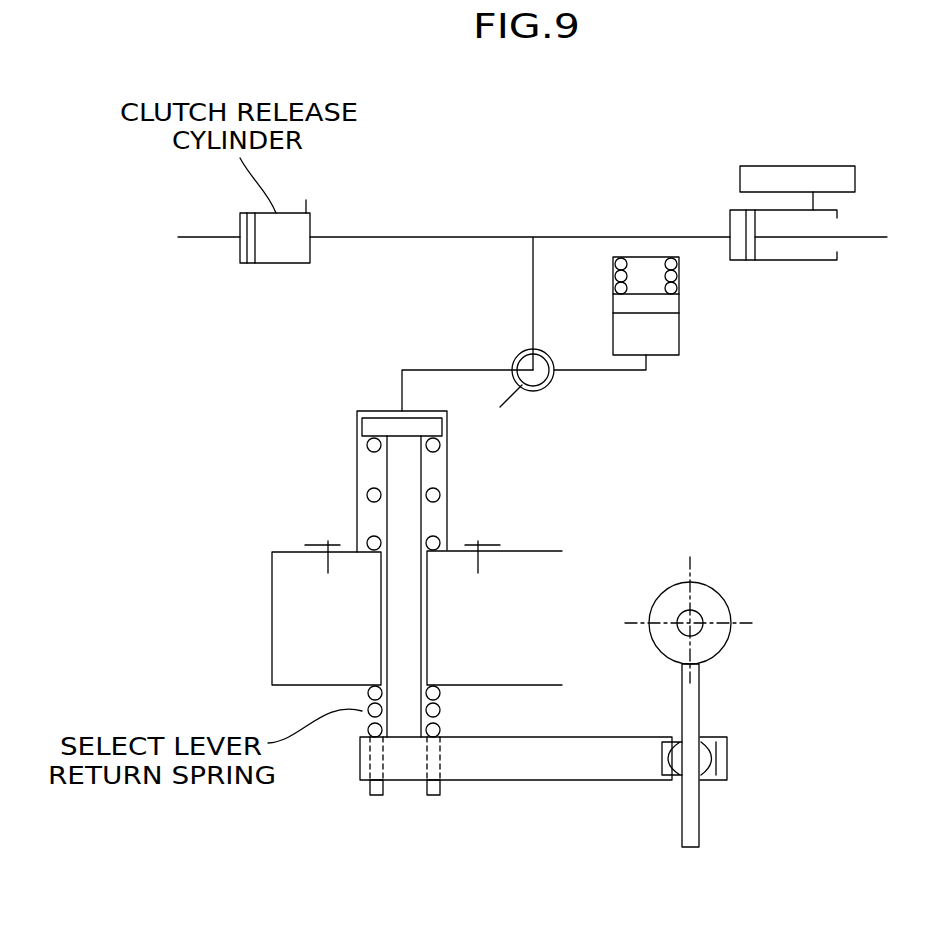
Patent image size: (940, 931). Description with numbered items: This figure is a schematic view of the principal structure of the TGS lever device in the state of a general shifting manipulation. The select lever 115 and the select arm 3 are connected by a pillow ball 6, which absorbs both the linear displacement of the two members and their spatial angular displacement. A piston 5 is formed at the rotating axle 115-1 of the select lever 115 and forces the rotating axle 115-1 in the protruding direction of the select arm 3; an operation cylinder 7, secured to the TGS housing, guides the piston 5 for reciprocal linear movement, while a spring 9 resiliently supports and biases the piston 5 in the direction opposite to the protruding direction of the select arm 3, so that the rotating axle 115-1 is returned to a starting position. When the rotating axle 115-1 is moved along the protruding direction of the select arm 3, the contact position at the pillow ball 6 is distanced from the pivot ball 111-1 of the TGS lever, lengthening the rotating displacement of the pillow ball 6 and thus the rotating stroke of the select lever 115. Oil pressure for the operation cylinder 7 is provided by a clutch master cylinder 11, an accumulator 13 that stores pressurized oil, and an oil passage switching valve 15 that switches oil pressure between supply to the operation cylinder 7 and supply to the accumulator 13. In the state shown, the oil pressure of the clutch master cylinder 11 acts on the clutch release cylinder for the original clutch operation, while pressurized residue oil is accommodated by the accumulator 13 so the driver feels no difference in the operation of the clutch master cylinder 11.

The select arm 3 is at (693, 812).
The piston 5 is at (438, 428).
The pillow ball 6 is at (680, 767).
The operation cylinder 7 is at (357, 443).
The spring 9 is at (366, 496).
The clutch master cylinder 11 is at (786, 260).
The accumulator 13 is at (670, 335).
The oil passage switching valve 15 is at (548, 383).
The pivot ball 111-1 is at (712, 598).
The select lever 115 is at (520, 766).
The rotating axle 115-1 is at (395, 630).